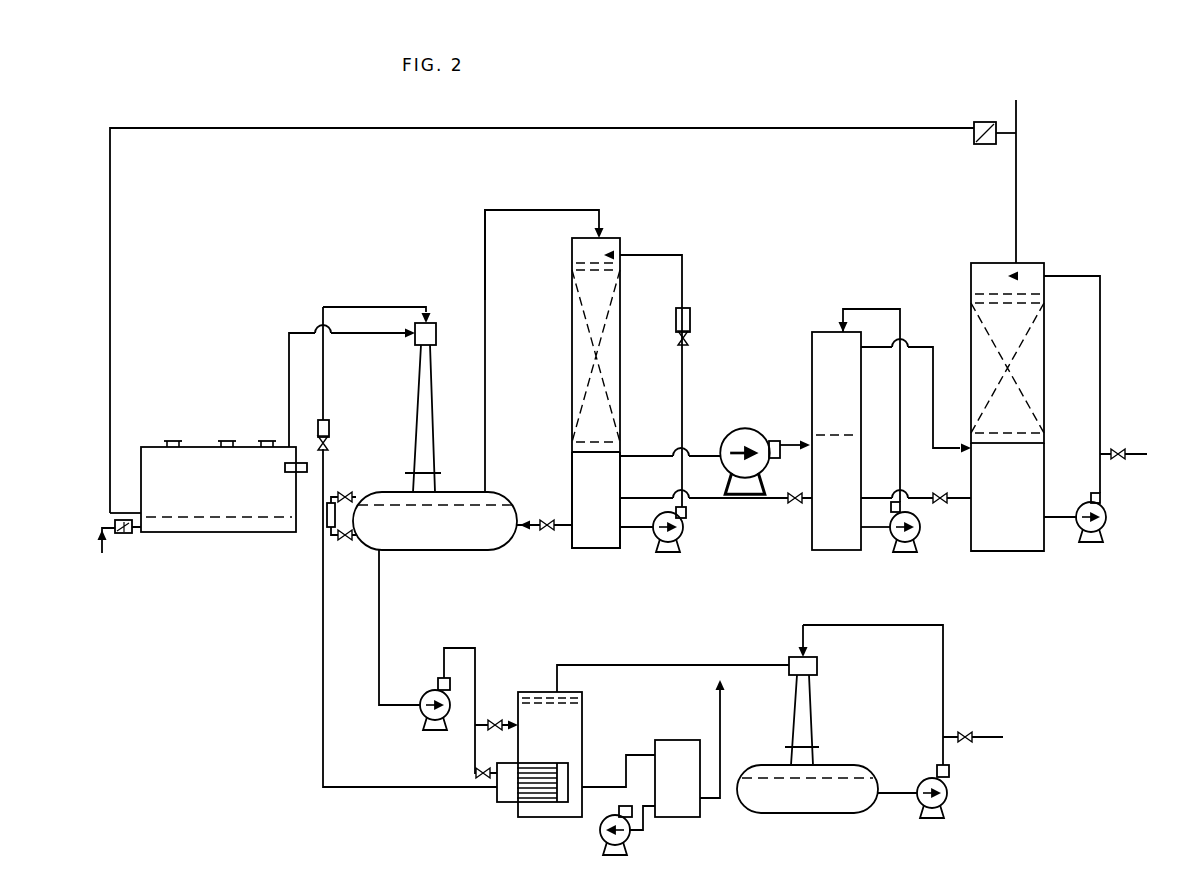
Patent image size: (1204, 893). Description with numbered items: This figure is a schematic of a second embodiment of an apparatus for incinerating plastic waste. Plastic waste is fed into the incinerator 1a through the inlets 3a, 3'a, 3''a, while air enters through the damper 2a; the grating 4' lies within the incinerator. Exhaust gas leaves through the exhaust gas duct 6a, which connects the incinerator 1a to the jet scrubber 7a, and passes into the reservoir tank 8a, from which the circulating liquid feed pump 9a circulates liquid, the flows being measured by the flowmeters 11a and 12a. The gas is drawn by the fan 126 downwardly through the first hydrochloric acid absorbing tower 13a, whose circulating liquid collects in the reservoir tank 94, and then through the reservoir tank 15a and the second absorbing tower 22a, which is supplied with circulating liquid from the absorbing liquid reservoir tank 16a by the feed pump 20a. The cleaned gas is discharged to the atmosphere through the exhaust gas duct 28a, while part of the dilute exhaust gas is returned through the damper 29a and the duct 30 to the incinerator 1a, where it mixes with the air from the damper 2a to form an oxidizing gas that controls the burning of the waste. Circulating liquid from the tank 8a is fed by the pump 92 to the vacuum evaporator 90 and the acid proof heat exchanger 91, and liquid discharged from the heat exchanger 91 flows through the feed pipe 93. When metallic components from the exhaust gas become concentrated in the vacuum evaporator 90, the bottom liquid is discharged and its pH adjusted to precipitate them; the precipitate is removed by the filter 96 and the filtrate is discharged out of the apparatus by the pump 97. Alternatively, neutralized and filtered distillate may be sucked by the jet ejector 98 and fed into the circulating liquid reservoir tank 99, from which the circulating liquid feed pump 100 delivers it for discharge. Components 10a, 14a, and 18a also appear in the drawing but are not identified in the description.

The incinerator 1a is at (141, 494).
The damper for air 2a is at (122, 535).
The inlet 3a is at (175, 441).
The inlet 3'a is at (226, 429).
The inlet 3''a is at (269, 429).
The grating 4' is at (219, 544).
The exhaust gas duct 6a is at (289, 349).
The jet scrubber 7a is at (436, 337).
The reservoir tank 8a is at (436, 552).
The circulating liquid feed pump 9a is at (683, 534).
The tank outlet 10a is at (290, 473).
The flowmeter 11a is at (692, 321).
The flowmeter 12a is at (330, 429).
The first hydrochloric acid absorbing tower 13a is at (572, 284).
The gas line 14a is at (549, 209).
The reservoir tank 15a is at (812, 377).
The absorbing liquid reservoir tank 16a is at (1044, 475).
The pump 18a is at (920, 528).
The feed pump 20a is at (1106, 517).
The second absorbing tower 22a is at (1044, 324).
The duct for exhaust gas 28a is at (1018, 207).
The damper 29a is at (981, 121).
The duct 30 is at (618, 128).
The feed pipe for the circulating liquid 93 is at (321, 722).
The reservoir tank for the circulating liquid 94 is at (593, 550).
The fan 126 is at (744, 430).
The pump 92 is at (428, 731).
The vacuum evaporator 90 is at (592, 722).
The acid proof heat exchanger 91 is at (496, 800).
The filter 96 is at (678, 740).
The pump 97 is at (627, 840).
The jet ejector 98 is at (812, 717).
The circulating liquid reservoir tank 99 is at (845, 766).
The circulating liquid feed pump 100 is at (949, 793).